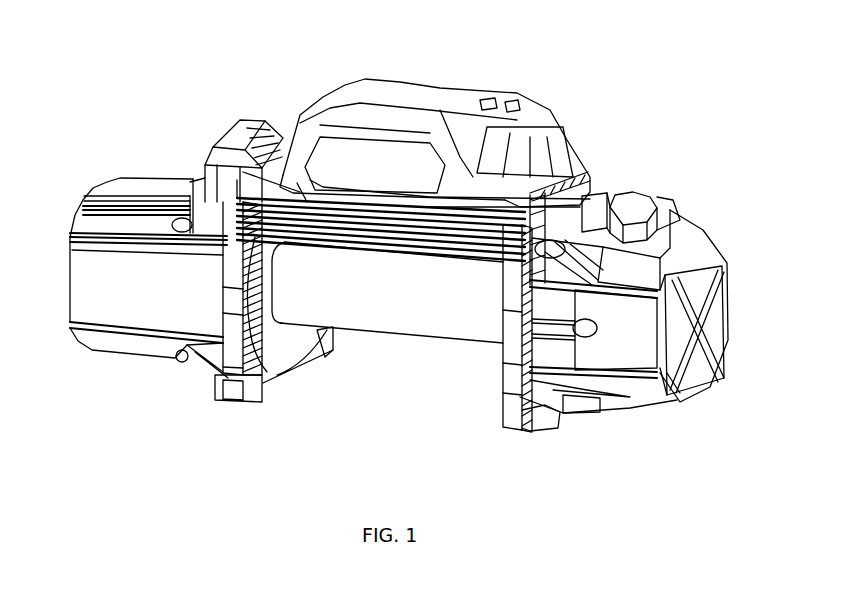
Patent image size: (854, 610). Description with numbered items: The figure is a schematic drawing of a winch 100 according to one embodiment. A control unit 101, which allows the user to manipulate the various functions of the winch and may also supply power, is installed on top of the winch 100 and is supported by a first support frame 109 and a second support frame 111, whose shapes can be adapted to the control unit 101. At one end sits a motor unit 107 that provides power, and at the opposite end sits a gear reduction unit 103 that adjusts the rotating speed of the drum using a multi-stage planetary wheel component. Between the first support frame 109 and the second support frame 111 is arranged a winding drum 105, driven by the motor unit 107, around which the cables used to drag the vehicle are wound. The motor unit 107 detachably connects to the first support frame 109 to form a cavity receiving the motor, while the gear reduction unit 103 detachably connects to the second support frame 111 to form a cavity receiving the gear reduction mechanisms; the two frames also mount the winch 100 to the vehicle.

The winch 100 is at (393, 239).
The control unit 101 is at (444, 76).
The gear reduction unit 103 is at (654, 407).
The winding drum 105 is at (413, 358).
The motor unit 107 is at (92, 181).
The first support frame 109 is at (286, 402).
The second support frame 111 is at (604, 187).